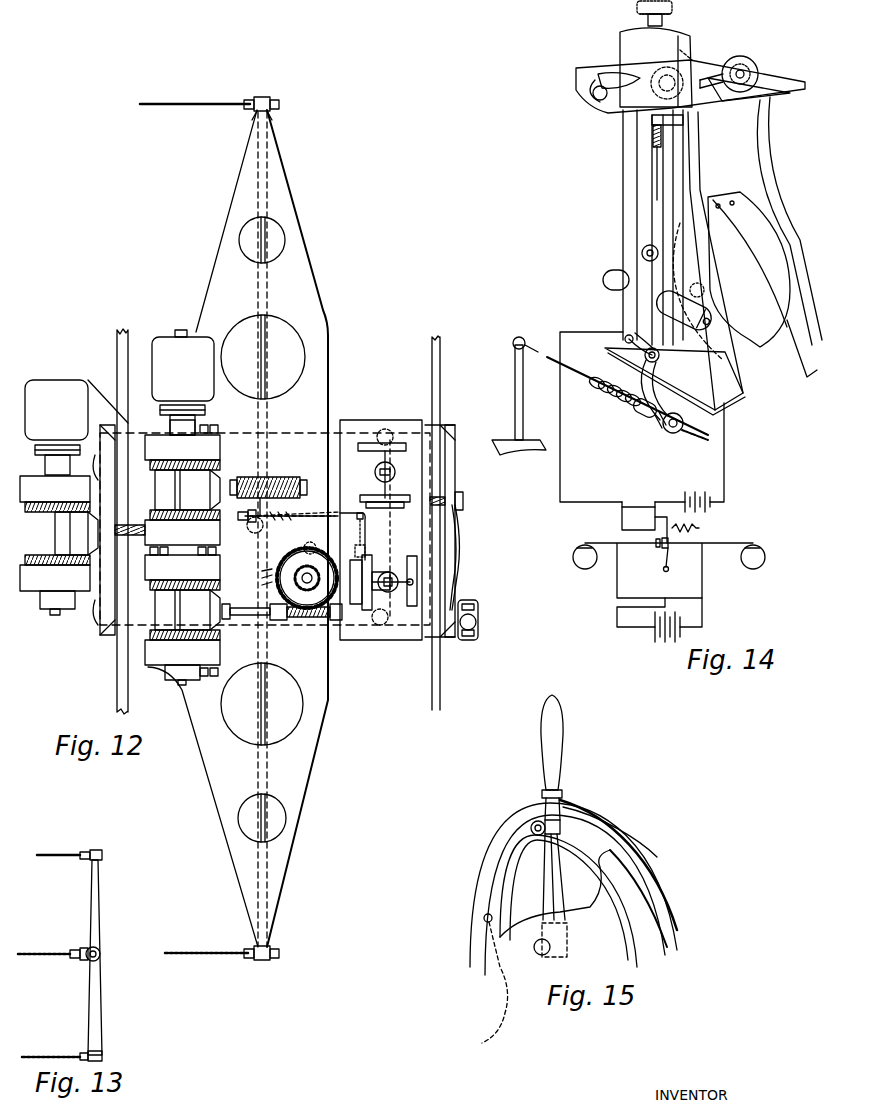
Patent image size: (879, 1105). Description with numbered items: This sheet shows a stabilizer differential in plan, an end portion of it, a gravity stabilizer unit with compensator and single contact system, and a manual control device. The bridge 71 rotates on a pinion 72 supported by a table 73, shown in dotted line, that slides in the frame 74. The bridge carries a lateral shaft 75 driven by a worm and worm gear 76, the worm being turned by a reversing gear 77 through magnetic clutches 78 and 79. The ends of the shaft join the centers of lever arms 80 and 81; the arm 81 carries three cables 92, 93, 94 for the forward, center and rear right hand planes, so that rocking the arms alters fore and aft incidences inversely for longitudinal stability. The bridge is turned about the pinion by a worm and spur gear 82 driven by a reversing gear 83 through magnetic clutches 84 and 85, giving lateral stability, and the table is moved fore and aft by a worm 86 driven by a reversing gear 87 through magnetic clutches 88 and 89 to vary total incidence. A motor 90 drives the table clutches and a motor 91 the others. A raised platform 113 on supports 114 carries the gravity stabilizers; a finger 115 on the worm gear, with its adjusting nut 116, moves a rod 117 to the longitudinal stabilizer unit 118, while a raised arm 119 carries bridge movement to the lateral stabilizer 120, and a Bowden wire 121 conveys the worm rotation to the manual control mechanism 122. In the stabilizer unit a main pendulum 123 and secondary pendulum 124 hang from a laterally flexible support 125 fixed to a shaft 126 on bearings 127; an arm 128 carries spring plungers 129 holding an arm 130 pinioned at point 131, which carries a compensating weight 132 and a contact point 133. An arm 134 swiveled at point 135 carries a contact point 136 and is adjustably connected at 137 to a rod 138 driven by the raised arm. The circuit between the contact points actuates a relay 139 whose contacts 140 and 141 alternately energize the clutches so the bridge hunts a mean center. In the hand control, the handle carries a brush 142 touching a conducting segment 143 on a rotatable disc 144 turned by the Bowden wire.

In FIG. 12, the bridge 71 is at (305, 250).
In FIG. 12, the pinion 72 is at (278, 538).
In FIG. 12, the table 73 is at (300, 432).
In FIG. 12, the frame 74 is at (458, 501).
In FIG. 12, the lateral shaft 75 is at (272, 710).
In FIG. 12, the worm and worm gear 76 is at (278, 476).
In FIG. 12, the reversing gear 77 is at (187, 490).
In FIG. 12, the magnetic clutch 78 is at (182, 445).
In FIG. 12, the magnetic clutch 79 is at (182, 527).
In FIG. 12, the lever arm 80 is at (209, 102).
In FIG. 12, the lever arm 81 is at (222, 964).
In FIG. 13, the lever arm 81 is at (104, 992).
In FIG. 12, the worm and spur gear 82 is at (310, 618).
In FIG. 12, the reversing gear 83 is at (187, 610).
In FIG. 12, the magnetic clutch 84 is at (182, 568).
In FIG. 14, the magnetic clutch 84 is at (580, 568).
In FIG. 12, the magnetic clutch 85 is at (182, 657).
In FIG. 14, the magnetic clutch 85 is at (750, 568).
In FIG. 12, the worm 86 is at (132, 515).
In FIG. 12, the reversing gear 87 is at (76, 533).
In FIG. 12, the magnetic clutch 88 is at (55, 494).
In FIG. 12, the magnetic clutch 89 is at (55, 585).
In FIG. 12, the motor 90 is at (56, 427).
In FIG. 12, the motor 91 is at (183, 382).
In FIG. 13, the cable 92 is at (69, 849).
In FIG. 13, the cable 93 is at (59, 948).
In FIG. 13, the cable 94 is at (62, 1049).
In FIG. 12, the raised platform 113 is at (368, 640).
In FIG. 12, the support 114 is at (388, 434).
In FIG. 12, the finger 115 is at (292, 512).
In FIG. 12, the adjusting nut 116 is at (248, 522).
In FIG. 12, the rod 117 is at (343, 503).
In FIG. 12, the longitudinal stabilizer unit 118 is at (396, 474).
In FIG. 12, the raised arm 119 is at (366, 540).
In FIG. 14, the raised arm 119 is at (518, 380).
In FIG. 12, the lateral stabilizer 120 is at (394, 578).
In FIG. 12, the Bowden wire 121 is at (455, 588).
In FIG. 15, the Bowden wire 121 is at (480, 968).
In FIG. 12, the manual control mechanism 122 is at (478, 618).
In FIG. 15, the manual control mechanism 122 is at (564, 725).
In FIG. 14, the main pendulum 123 is at (731, 276).
In FIG. 14, the secondary pendulum 124 is at (712, 350).
In FIG. 14, the laterally flexible support 125 is at (755, 253).
In FIG. 14, the shaft 126 is at (705, 60).
In FIG. 14, the bearing 127 is at (758, 56).
In FIG. 14, the arm 128 is at (660, 135).
In FIG. 14, the spring plunger 129 is at (612, 285).
In FIG. 14, the arm 130 is at (652, 205).
In FIG. 14, the pivot point 131 is at (641, 253).
In FIG. 14, the compensating weight 132 is at (656, 67).
In FIG. 14, the contact point 133 is at (655, 362).
In FIG. 14, the arm 134 is at (622, 130).
In FIG. 14, the swivel point 135 is at (592, 93).
In FIG. 14, the contact point 136 is at (626, 334).
In FIG. 14, the adjustable connection 137 is at (652, 425).
In FIG. 14, the rod 138 is at (585, 382).
In FIG. 14, the relay 139 is at (660, 522).
In FIG. 14, the contact 140 is at (669, 548).
In FIG. 14, the contact 141 is at (657, 548).
In FIG. 15, the brush 142 is at (536, 838).
In FIG. 15, the conducting segment 143 is at (520, 840).
In FIG. 15, the rotatable disc 144 is at (495, 868).